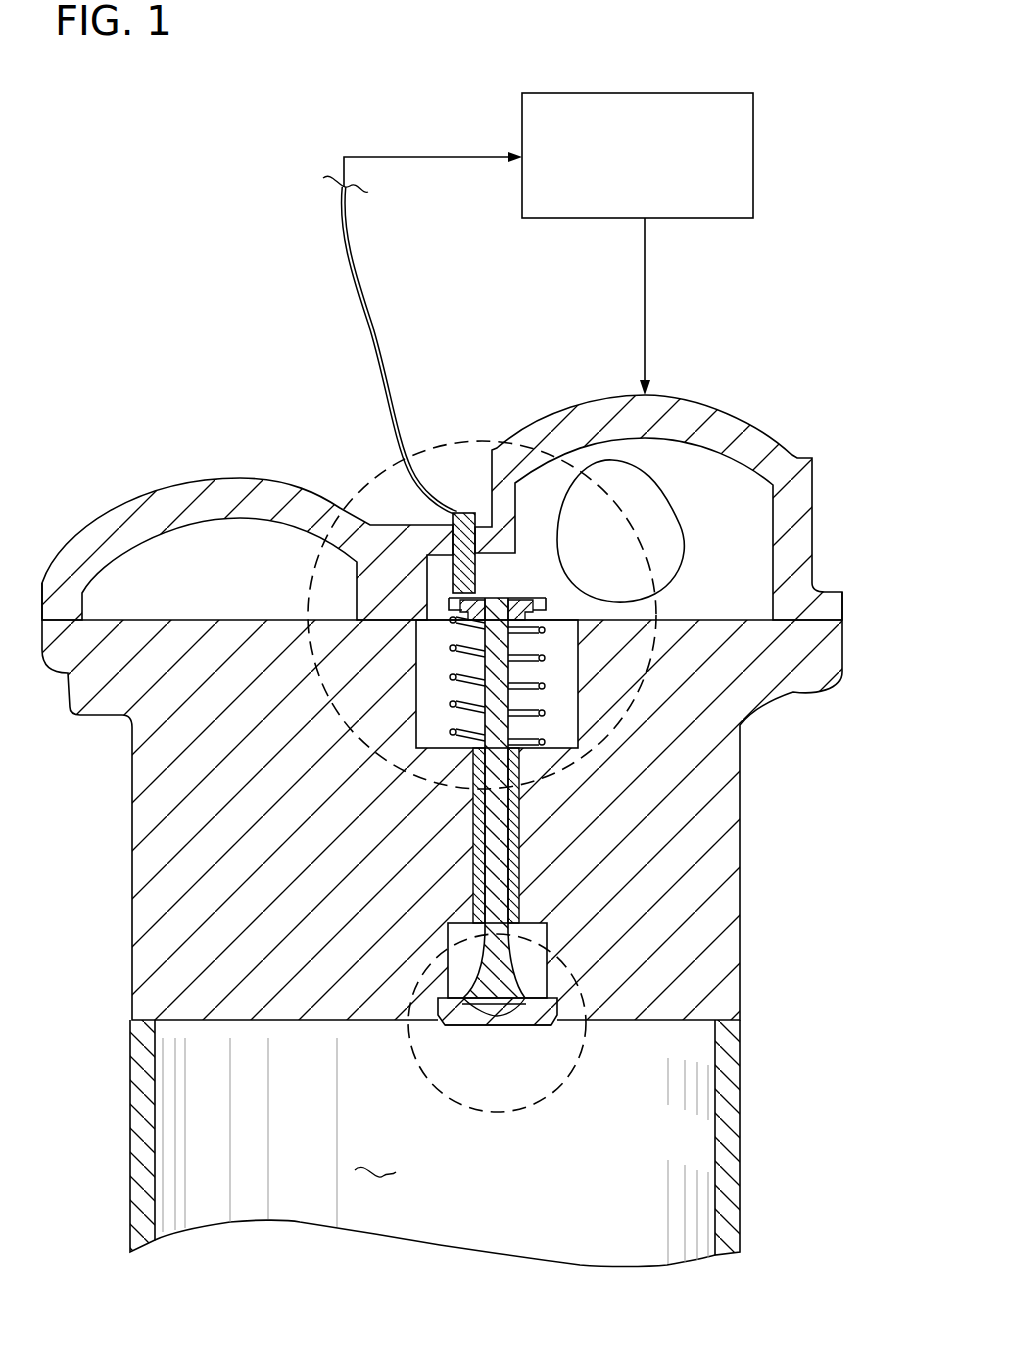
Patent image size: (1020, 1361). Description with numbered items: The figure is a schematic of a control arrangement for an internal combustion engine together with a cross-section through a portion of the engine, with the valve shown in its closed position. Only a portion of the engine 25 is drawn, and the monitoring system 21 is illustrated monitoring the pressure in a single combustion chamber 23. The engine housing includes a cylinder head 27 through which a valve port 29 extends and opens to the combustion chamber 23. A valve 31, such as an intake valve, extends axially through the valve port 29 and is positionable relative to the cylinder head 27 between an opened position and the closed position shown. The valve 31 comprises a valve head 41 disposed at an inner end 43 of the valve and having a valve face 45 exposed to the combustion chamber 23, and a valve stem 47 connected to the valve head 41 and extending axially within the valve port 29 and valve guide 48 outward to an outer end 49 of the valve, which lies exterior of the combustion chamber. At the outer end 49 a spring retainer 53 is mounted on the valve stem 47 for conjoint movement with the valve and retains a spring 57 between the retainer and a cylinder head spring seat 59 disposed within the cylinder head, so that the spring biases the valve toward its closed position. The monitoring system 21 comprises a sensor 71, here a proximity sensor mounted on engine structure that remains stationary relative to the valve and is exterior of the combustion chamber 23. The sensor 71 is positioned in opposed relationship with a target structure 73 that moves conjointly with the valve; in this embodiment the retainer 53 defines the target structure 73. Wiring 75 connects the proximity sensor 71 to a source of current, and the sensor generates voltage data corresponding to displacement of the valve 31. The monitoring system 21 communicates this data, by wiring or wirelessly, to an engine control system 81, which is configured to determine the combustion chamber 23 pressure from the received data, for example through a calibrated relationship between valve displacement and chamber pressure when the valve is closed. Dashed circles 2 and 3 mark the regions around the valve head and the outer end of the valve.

The valve seat region 2 is at (536, 1110).
The valve head region 3 is at (362, 468).
The monitoring system 21 is at (425, 474).
The combustion chamber 23 is at (362, 1186).
The internal combustion engine 25 is at (100, 983).
The cylinder head 27 is at (132, 822).
The valve port 29 is at (548, 923).
The valve 31 is at (522, 961).
The valve head 41 is at (530, 1025).
The inner end 43 is at (555, 1024).
The valve face 45 is at (507, 1025).
The valve stem 47 is at (520, 800).
The valve guide 48 is at (522, 853).
The outer end 49 is at (508, 598).
The spring retainer 53 is at (547, 602).
The spring 57 is at (548, 681).
The cylinder head spring seat 59 is at (433, 743).
The sensor 71 is at (453, 540).
The target structure 73 is at (434, 606).
The wiring 75 is at (362, 265).
The engine control system 81 is at (686, 239).